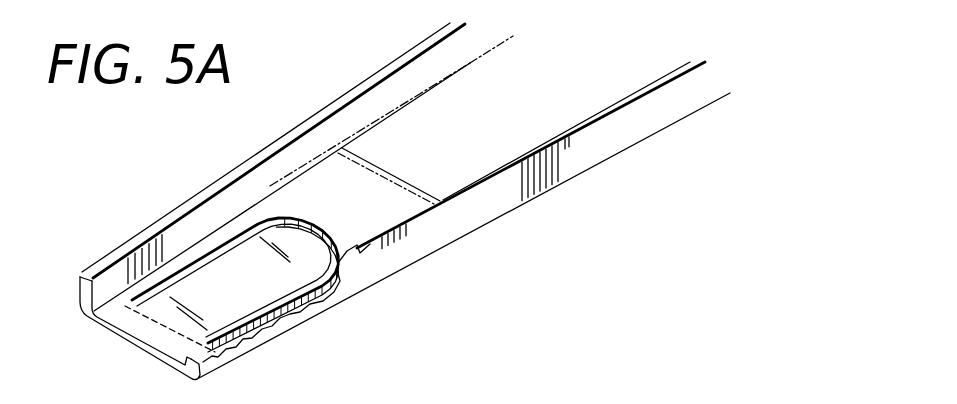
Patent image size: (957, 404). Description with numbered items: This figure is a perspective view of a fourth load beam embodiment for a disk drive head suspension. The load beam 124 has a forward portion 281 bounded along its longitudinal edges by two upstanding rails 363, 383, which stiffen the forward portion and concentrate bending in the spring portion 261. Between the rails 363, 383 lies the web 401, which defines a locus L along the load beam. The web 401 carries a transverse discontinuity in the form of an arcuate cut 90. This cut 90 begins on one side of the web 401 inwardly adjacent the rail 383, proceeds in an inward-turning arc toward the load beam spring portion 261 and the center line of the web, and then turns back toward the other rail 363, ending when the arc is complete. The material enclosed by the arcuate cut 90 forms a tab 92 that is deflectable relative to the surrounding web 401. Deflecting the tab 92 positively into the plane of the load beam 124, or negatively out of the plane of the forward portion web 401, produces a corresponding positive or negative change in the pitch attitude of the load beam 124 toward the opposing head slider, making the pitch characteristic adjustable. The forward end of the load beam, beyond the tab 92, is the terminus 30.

The terminus 30 is at (150, 350).
The arcuate cut 90 is at (323, 230).
The tab 92 is at (262, 286).
The load beam 124 is at (543, 112).
The load beam spring portion 261 is at (570, 68).
The forward portion 281 is at (355, 172).
The rail 363 is at (245, 165).
The rail 383 is at (432, 211).
The web 401 is at (470, 166).
The locus L is at (290, 203).